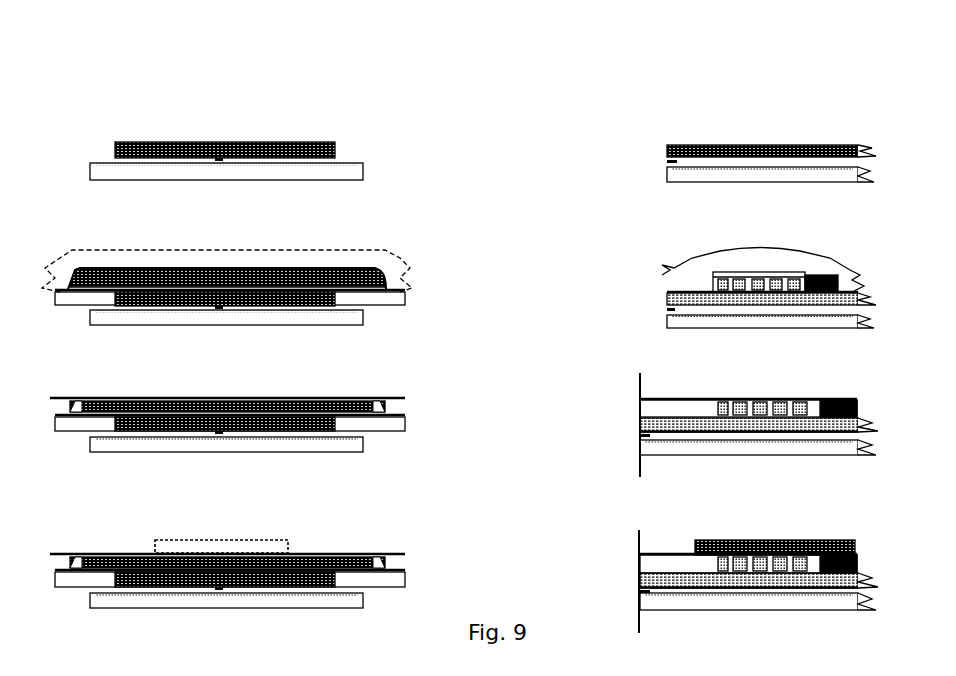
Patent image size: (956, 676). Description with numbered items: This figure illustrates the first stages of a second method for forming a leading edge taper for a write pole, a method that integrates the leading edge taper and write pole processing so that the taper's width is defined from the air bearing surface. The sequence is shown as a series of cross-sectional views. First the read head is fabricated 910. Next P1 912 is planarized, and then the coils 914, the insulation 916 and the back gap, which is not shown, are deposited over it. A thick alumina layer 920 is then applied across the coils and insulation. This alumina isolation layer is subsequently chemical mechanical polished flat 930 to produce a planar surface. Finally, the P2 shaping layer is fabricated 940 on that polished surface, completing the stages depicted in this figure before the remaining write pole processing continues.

The read head 910 is at (125, 115).
The P1 912 is at (233, 287).
The coils 914 is at (788, 282).
The insulation 916 is at (72, 280).
The thick alumina layer 920 is at (307, 258).
The chemical mechanical polished flat alumina isolation layer 930 is at (90, 385).
The P2 shaping layer 940 is at (162, 548).